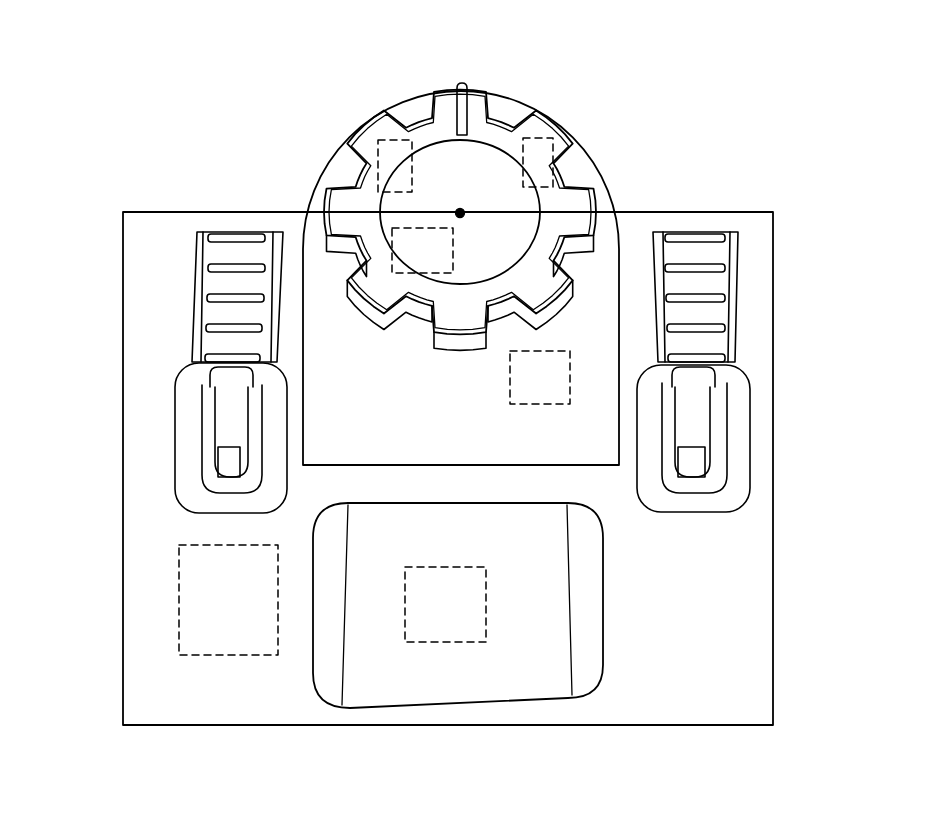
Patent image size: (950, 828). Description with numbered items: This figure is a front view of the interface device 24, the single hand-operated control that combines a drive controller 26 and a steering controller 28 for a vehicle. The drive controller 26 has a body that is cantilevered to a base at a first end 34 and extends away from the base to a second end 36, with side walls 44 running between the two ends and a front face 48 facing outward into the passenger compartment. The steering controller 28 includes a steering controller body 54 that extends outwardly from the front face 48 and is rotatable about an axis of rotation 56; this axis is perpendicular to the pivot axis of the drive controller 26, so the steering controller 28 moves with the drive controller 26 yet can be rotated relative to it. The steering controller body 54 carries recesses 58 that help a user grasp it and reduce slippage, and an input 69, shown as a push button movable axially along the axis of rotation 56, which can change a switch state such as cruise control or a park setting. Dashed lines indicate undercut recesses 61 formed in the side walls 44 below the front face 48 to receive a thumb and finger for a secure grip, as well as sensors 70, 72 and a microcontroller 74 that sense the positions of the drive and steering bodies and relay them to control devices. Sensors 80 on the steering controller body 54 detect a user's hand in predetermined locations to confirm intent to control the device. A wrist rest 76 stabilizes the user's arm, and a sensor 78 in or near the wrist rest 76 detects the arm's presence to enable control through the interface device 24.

The interface device 24 is at (270, 94).
The drive controller 26 is at (590, 128).
The steering controller 28 is at (374, 97).
The first end 34 is at (606, 463).
The second end 36 is at (515, 95).
The side walls 44 is at (305, 233).
The front face 48 is at (590, 172).
The steering controller body 54 is at (563, 218).
The axis of rotation 56 is at (460, 213).
The recesses 58 is at (411, 327).
The undercut recesses 61 is at (315, 270).
The input 69 is at (430, 160).
The sensor 70 is at (544, 385).
The sensor 72 is at (407, 262).
The microcontroller 74 is at (207, 600).
The wrist rest 76 is at (547, 645).
The sensor 78 is at (466, 627).
The sensors 80 is at (390, 157).